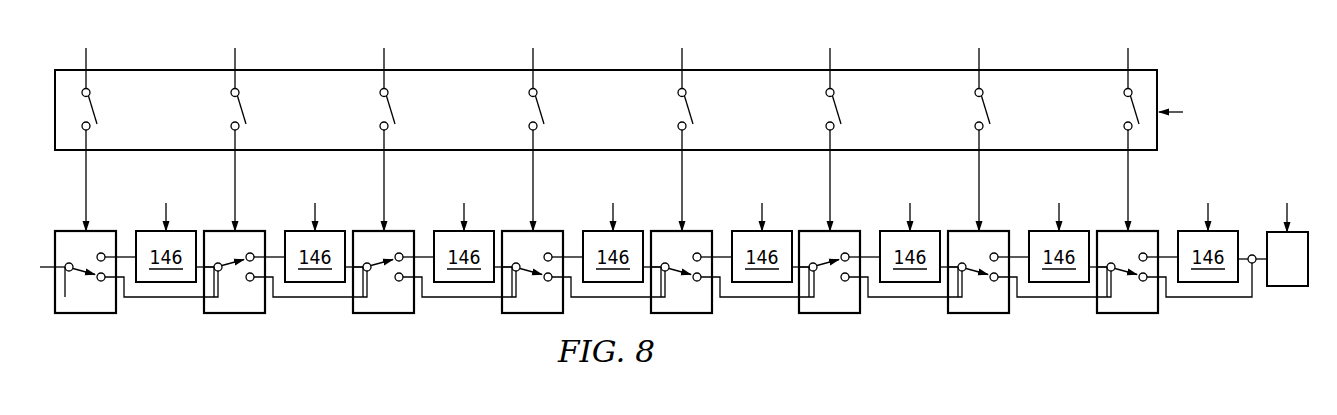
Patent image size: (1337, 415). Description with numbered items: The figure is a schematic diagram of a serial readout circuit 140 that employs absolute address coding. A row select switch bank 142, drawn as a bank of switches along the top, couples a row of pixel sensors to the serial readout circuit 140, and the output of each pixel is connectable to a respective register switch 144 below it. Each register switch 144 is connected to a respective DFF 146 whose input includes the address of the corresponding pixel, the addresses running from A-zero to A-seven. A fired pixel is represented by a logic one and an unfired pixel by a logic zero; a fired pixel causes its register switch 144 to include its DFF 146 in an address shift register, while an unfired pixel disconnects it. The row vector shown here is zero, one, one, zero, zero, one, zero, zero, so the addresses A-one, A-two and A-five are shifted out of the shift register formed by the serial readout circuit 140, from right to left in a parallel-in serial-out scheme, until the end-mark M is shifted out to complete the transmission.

The serial readout circuit 140 is at (1205, 61).
The row select switch bank 142 is at (897, 66).
The register switch 144 is at (80, 314).
The DFF 146 is at (1288, 287).